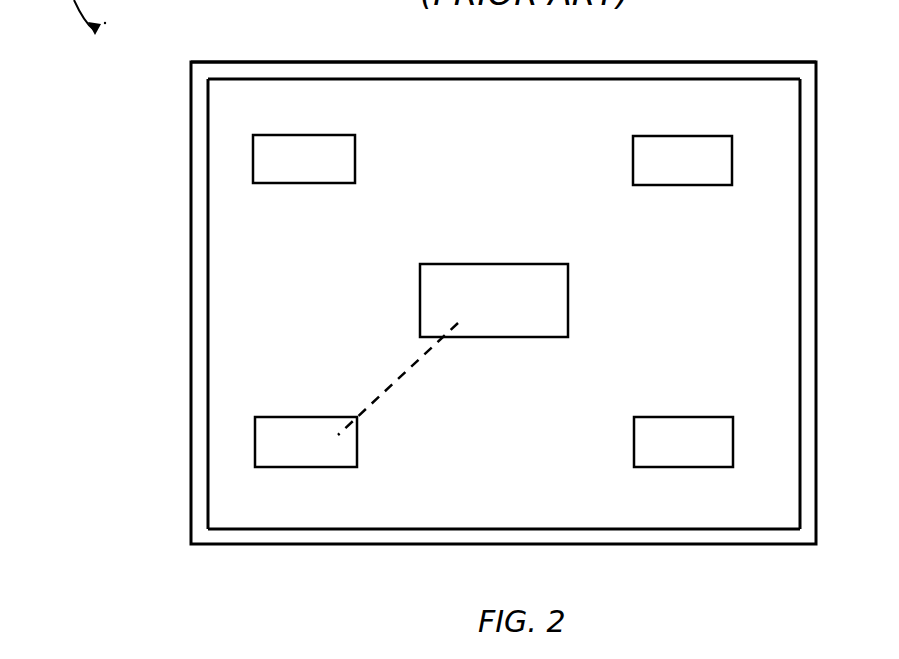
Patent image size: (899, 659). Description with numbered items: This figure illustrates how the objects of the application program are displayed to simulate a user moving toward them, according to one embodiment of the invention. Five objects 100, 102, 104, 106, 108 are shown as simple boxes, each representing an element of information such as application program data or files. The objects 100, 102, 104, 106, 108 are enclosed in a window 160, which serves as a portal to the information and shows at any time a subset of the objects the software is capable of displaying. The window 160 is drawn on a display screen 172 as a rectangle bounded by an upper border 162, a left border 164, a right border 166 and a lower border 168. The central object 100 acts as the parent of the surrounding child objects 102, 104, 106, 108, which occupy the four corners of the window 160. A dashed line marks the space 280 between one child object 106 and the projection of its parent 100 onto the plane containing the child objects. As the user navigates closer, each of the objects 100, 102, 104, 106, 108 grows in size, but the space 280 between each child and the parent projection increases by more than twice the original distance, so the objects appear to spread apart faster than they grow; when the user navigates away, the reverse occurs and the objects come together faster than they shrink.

The object 100 is at (494, 300).
The object 102 is at (304, 159).
The object 104 is at (682, 160).
The object 106 is at (306, 442).
The object 108 is at (683, 442).
The window 160 is at (669, 72).
The upper border 162 is at (290, 78).
The left border 164 is at (208, 102).
The right border 166 is at (800, 104).
The lower border 168 is at (588, 532).
The display screen 172 is at (373, 62).
The space 280 is at (392, 383).